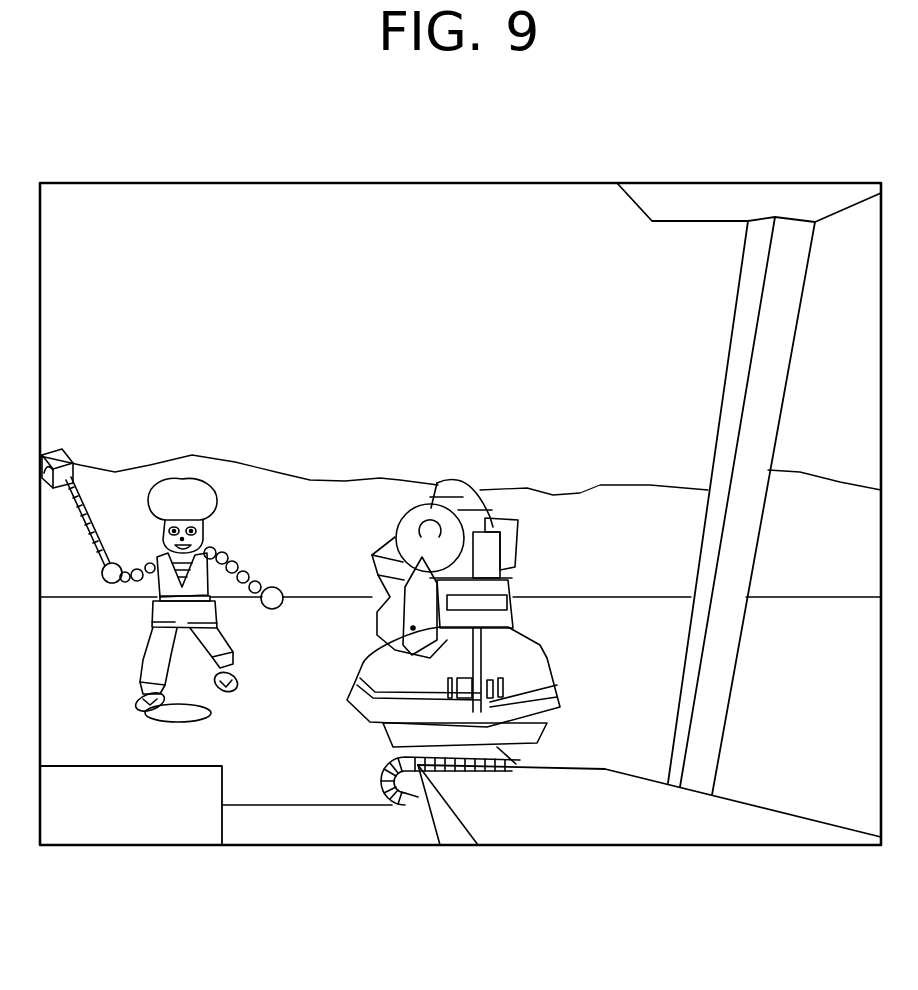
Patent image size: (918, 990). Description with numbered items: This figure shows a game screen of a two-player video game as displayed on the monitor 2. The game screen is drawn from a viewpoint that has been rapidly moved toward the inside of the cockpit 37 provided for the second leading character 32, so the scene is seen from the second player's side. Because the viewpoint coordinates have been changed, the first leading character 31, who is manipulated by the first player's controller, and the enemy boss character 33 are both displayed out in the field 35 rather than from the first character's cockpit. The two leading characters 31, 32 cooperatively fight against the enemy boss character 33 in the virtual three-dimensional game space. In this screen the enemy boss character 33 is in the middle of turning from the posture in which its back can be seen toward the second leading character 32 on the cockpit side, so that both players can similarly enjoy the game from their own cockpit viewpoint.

The monitor 2 is at (163, 198).
The first leading character 31 is at (178, 490).
The second leading character 32 is at (577, 832).
The enemy boss character 33 is at (455, 490).
The field 35 is at (641, 667).
The cockpit 37 is at (730, 419).